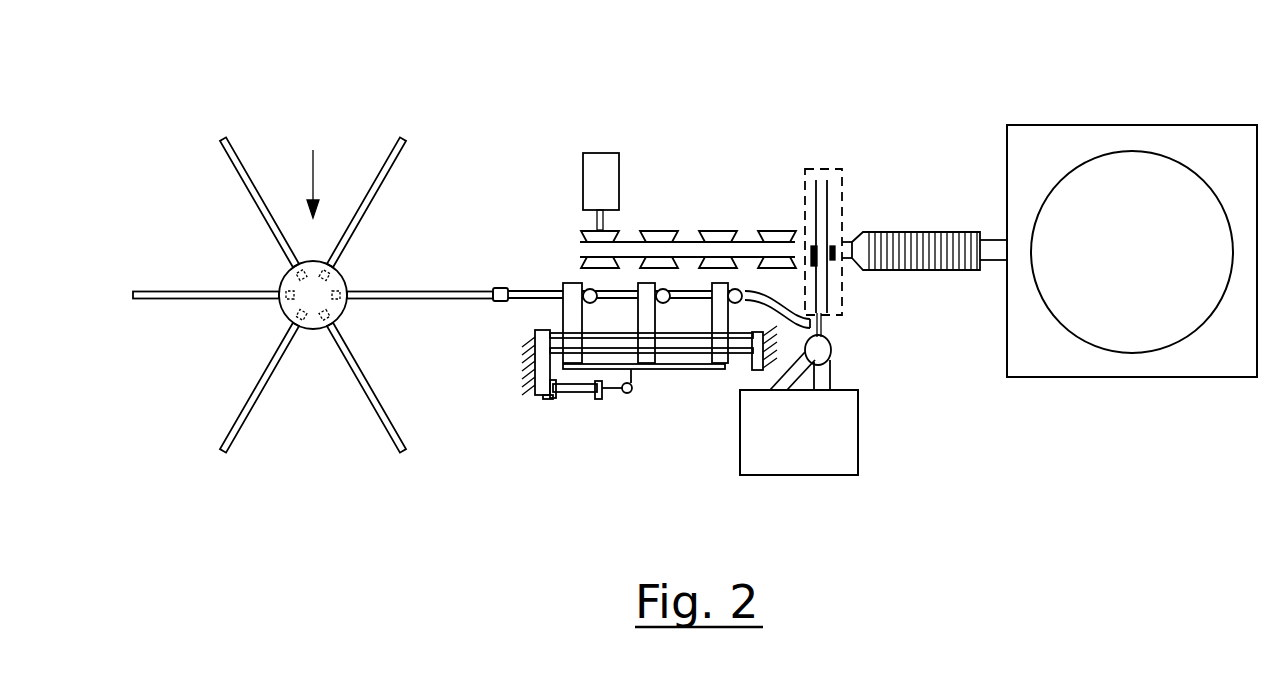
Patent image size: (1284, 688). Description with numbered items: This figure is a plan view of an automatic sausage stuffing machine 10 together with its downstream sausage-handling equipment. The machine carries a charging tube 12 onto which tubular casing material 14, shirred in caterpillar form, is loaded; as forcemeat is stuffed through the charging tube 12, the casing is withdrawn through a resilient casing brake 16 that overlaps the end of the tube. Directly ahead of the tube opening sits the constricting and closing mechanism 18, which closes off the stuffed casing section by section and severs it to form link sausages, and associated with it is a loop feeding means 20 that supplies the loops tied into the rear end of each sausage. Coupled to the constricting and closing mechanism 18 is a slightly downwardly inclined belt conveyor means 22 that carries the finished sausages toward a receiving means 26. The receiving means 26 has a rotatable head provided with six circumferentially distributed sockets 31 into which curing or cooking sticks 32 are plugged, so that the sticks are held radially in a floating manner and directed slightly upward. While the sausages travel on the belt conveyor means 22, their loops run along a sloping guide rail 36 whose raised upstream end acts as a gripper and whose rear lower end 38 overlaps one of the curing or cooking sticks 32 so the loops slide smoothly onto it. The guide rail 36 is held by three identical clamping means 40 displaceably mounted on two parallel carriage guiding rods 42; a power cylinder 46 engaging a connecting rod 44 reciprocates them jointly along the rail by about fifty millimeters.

The automatic sausage stuffing machine 10 is at (1057, 137).
The charging tube 12 is at (997, 246).
The tubular casing material 14 is at (912, 272).
The casing brake 16 is at (865, 270).
The constricting and closing mechanism 18 is at (843, 188).
The loop feeding means 20 is at (843, 390).
The belt conveyor means 22 is at (657, 232).
The receiving means 26 is at (316, 172).
The sockets 31 is at (285, 306).
The curing or cooking sticks 32 is at (400, 296).
The guide rail 36 is at (537, 290).
The rear lower end of guide rail 38 is at (500, 287).
The clamping means 40 is at (567, 302).
The carriage guiding rods 42 is at (696, 354).
The connecting rod 44 is at (663, 369).
The power cylinder 46 is at (579, 393).